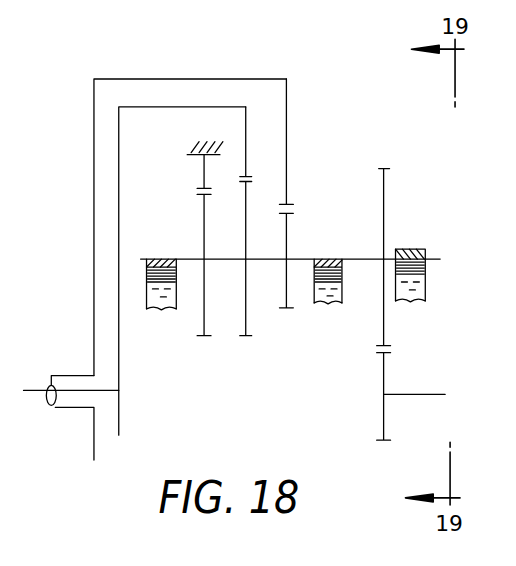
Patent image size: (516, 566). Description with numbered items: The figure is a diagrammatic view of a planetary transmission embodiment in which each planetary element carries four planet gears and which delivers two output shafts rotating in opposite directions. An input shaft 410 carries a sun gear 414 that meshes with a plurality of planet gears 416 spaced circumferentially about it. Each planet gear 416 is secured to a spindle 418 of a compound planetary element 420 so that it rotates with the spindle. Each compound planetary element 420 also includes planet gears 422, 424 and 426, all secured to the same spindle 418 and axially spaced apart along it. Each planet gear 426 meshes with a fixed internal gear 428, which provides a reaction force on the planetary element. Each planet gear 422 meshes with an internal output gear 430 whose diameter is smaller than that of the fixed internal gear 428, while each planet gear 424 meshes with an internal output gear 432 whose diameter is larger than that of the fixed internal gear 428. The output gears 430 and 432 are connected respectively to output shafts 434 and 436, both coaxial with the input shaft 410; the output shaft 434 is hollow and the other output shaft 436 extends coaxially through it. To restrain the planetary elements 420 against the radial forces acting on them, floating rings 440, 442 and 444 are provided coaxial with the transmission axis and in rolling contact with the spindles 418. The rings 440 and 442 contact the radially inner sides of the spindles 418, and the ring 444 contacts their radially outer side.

The input shaft 410 is at (404, 393).
The sun gear 414 is at (383, 422).
The planet gear 416 is at (386, 332).
The spindle 418 is at (370, 257).
The compound planetary element 420 is at (394, 225).
The planet gear 422 is at (287, 240).
The planet gear 424 is at (246, 242).
The planet gear 426 is at (182, 271).
The fixed internal gear 428 is at (200, 167).
The internal output gear 430 is at (212, 227).
The internal output gear 432 is at (244, 130).
The output shaft 434 is at (70, 374).
The output shaft 436 is at (71, 421).
The floating ring 440 is at (172, 312).
The floating ring 442 is at (340, 306).
The floating ring 444 is at (421, 288).